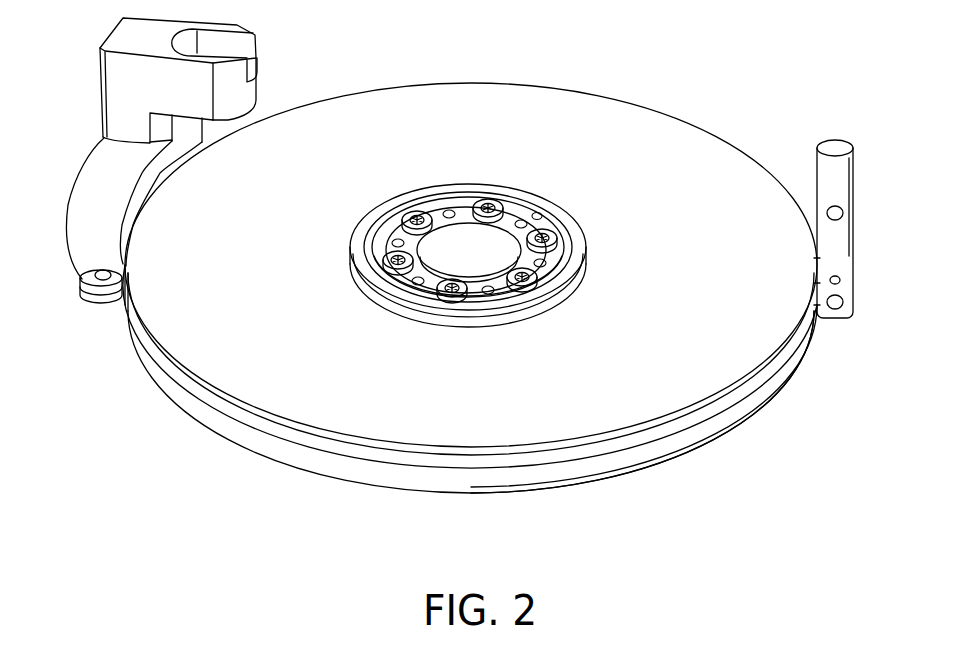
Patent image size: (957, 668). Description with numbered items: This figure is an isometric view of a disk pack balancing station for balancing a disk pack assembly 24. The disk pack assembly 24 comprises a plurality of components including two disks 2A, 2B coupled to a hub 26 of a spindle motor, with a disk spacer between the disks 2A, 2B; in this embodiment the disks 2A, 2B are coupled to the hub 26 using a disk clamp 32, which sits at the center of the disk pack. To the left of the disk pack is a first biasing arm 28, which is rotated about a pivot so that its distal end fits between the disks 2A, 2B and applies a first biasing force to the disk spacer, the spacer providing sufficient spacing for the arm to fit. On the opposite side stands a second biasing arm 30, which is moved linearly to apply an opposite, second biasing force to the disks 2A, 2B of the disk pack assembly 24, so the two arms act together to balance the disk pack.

The disk pack assembly 24 is at (540, 60).
The disk 2A is at (755, 374).
The disk 2B is at (732, 425).
The hub 26 is at (477, 251).
The first biasing arm 28 is at (82, 132).
The second biasing arm 30 is at (821, 128).
The disk clamp 32 is at (586, 241).